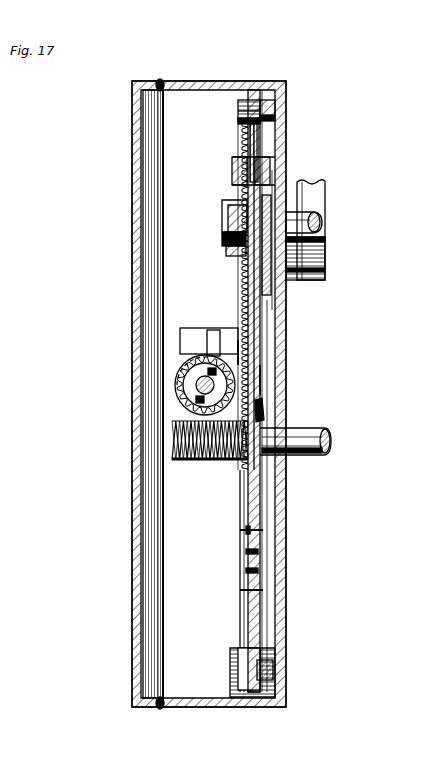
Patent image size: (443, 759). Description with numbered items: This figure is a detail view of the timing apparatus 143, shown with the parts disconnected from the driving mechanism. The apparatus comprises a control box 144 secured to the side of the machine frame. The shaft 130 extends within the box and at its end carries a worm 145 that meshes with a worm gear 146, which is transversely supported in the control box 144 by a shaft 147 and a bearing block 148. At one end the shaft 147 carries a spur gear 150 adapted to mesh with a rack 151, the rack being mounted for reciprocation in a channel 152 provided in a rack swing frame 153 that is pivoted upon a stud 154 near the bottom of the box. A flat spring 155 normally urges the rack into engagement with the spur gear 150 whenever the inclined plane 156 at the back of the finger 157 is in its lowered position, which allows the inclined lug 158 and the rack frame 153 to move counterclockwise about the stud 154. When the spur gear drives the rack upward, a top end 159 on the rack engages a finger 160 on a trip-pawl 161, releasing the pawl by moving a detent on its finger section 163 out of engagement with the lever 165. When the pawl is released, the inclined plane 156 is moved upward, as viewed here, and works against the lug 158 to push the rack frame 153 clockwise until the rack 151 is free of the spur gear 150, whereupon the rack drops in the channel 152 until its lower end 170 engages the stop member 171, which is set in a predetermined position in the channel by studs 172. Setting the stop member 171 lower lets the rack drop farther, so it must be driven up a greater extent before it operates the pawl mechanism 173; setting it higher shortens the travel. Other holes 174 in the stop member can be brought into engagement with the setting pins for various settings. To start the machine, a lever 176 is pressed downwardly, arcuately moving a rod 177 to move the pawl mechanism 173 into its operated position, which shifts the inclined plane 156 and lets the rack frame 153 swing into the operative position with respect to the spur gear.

The shaft 130 is at (312, 434).
The timing apparatus 143 is at (292, 94).
The control box 144 is at (247, 81).
The worm 145 is at (203, 465).
The worm gear 146 is at (176, 390).
The shaft 147 is at (198, 382).
The bearing block 148 is at (186, 343).
The spur gear 150 is at (215, 357).
The rack 151 is at (249, 352).
The channel 152 is at (262, 380).
The rack swing frame 153 is at (265, 548).
The stud 154 is at (268, 672).
The flat spring 155 is at (300, 246).
The inclined plane 156 is at (229, 218).
The finger 157 is at (226, 239).
The inclined lug 158 is at (237, 200).
The top end 159 is at (258, 131).
The finger 160 is at (240, 117).
The trip-pawl 161 is at (270, 113).
The finger section 163 is at (240, 142).
The lever 165 is at (284, 208).
The lower end 170 is at (262, 410).
The stop member 171 is at (252, 627).
The studs 172 is at (242, 530).
The pawl mechanism 173 is at (177, 131).
The holes 174 is at (248, 568).
The lever 176 is at (306, 191).
The rod 177 is at (268, 286).